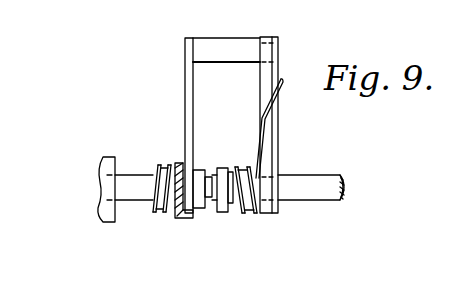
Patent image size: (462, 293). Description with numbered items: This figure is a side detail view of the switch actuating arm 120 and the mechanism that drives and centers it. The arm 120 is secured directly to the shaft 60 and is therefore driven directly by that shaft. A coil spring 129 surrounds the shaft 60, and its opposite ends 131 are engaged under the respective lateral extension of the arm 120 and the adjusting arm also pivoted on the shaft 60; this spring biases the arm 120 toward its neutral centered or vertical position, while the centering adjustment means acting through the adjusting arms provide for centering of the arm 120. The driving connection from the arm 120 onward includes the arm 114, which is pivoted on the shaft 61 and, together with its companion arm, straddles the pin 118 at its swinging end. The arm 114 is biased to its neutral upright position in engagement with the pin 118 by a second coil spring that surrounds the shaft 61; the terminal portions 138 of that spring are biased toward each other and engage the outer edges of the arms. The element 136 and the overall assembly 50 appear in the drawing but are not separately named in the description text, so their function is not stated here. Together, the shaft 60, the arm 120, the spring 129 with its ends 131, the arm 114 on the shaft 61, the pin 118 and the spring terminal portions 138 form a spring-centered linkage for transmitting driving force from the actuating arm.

The handle assembly 50 is at (103, 230).
The shaft 60 is at (138, 201).
The shaft 61 is at (314, 182).
The arm 114 is at (278, 153).
The pin 118 is at (212, 50).
The arm 120 is at (185, 105).
The coil spring 129 is at (162, 214).
The opposite ends 131 is at (184, 221).
The spring 136 is at (243, 213).
The terminal portions 138 is at (258, 140).